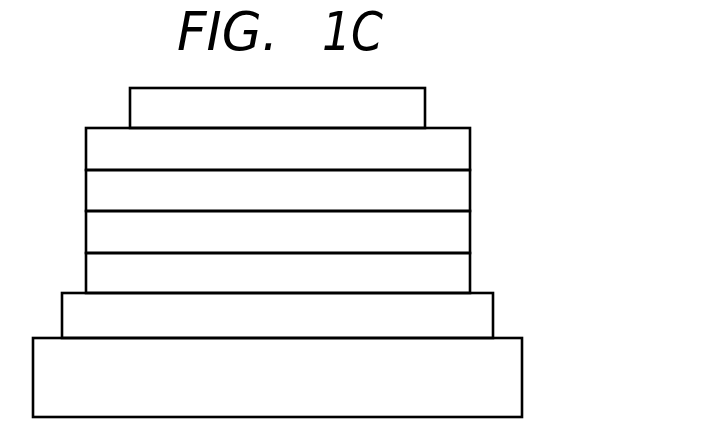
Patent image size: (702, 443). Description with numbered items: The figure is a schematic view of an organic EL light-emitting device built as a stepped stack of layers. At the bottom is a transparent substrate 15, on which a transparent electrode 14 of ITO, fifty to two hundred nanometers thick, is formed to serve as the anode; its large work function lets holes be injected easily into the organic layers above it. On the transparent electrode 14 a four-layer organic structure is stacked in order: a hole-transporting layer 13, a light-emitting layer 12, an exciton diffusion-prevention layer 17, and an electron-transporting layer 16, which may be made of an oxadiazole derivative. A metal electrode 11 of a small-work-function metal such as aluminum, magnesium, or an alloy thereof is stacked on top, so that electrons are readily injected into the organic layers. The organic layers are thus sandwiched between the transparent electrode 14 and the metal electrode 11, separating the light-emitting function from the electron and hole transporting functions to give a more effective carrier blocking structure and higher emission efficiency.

The metal electrode 11 is at (410, 108).
The electron-transporting layer 16 is at (448, 153).
The exciton diffusion-prevention layer 17 is at (448, 192).
The light-emitting layer 12 is at (450, 234).
The hole-transporting layer 13 is at (450, 273).
The transparent electrode 14 is at (480, 315).
The transparent substrate 15 is at (486, 379).